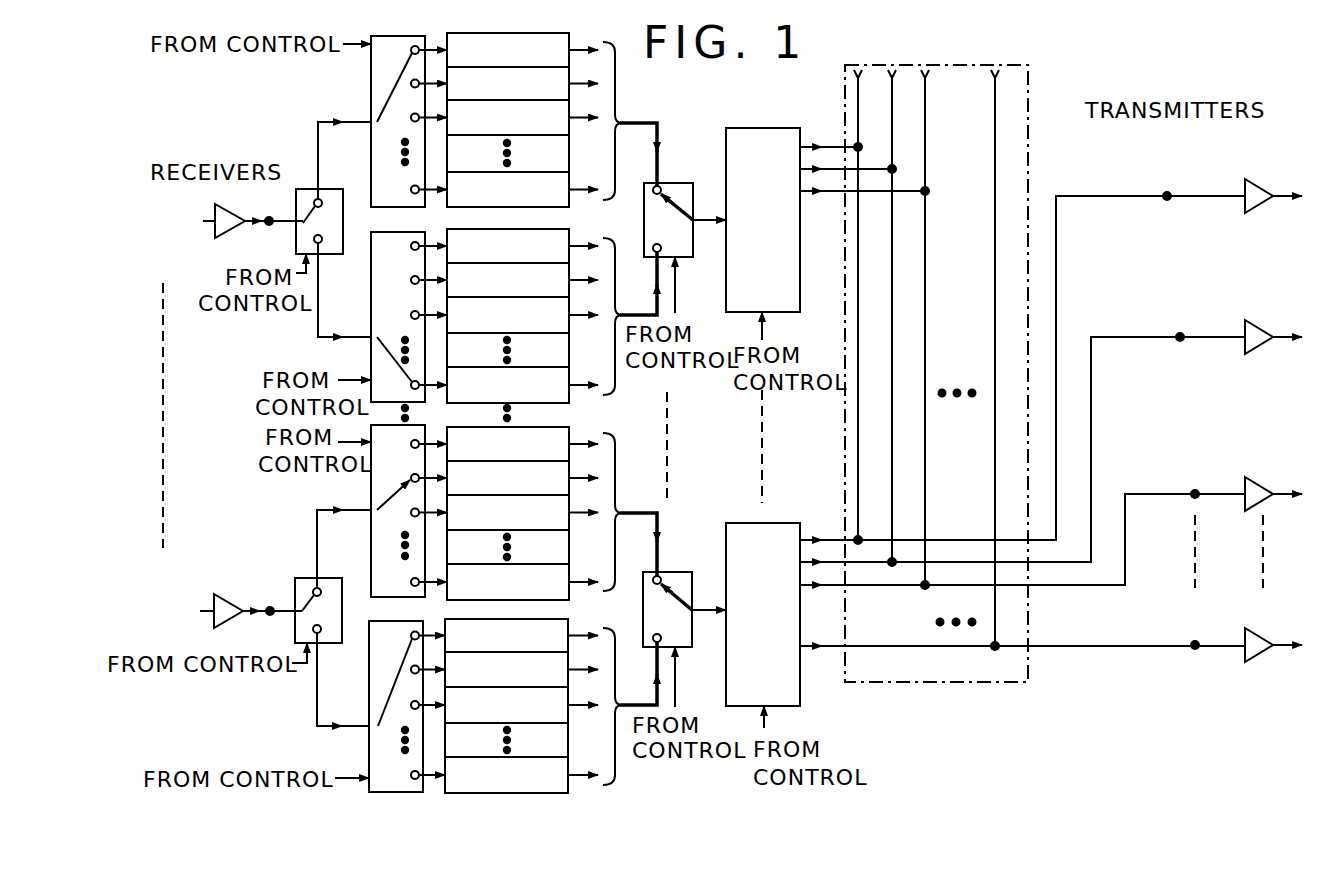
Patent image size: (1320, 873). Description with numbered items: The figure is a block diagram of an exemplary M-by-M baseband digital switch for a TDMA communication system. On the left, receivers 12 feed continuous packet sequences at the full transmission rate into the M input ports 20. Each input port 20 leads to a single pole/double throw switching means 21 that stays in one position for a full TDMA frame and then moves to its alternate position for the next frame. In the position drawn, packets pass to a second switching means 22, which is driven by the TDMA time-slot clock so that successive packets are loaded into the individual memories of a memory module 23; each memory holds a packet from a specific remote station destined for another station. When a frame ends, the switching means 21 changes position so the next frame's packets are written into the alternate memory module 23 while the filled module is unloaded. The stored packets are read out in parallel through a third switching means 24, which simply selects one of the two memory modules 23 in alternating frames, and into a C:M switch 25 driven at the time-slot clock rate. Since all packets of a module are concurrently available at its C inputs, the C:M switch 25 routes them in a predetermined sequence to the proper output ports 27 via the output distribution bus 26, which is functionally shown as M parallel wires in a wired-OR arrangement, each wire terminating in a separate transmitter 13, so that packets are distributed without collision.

The receiver 12 is at (213, 607).
The transmitter 13 is at (1265, 202).
The input port 20 is at (270, 606).
The single pole/double throw switching means 21 is at (338, 188).
The second switching means 22 is at (369, 763).
The memory module 23 is at (545, 207).
The third switching means 24 is at (695, 169).
The C:M switch 25 is at (786, 522).
The output distribution bus 26 is at (1097, 67).
The output port 27 is at (1167, 194).